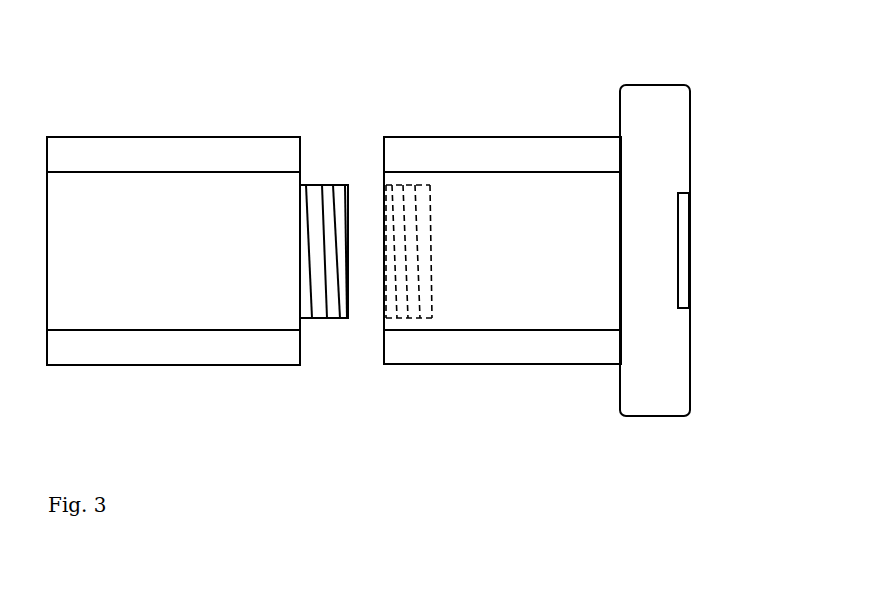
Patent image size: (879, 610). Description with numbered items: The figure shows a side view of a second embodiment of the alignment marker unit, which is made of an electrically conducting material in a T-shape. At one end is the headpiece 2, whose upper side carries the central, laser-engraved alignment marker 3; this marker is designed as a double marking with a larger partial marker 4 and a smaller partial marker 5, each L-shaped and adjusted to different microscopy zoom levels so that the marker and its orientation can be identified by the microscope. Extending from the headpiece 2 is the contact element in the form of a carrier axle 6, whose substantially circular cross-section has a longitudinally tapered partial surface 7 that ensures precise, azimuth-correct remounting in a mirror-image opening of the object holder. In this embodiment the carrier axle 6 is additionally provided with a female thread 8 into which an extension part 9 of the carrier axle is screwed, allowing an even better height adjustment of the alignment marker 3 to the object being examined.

The headpiece 2 is at (648, 107).
The alignment marker 3 is at (740, 250).
The larger partial marker 4 is at (740, 250).
The smaller partial marker 5 is at (683, 252).
The carrier axle 6 is at (555, 355).
The partial surface 7 is at (532, 200).
The female thread 8 is at (403, 300).
The extension part 9 is at (192, 345).